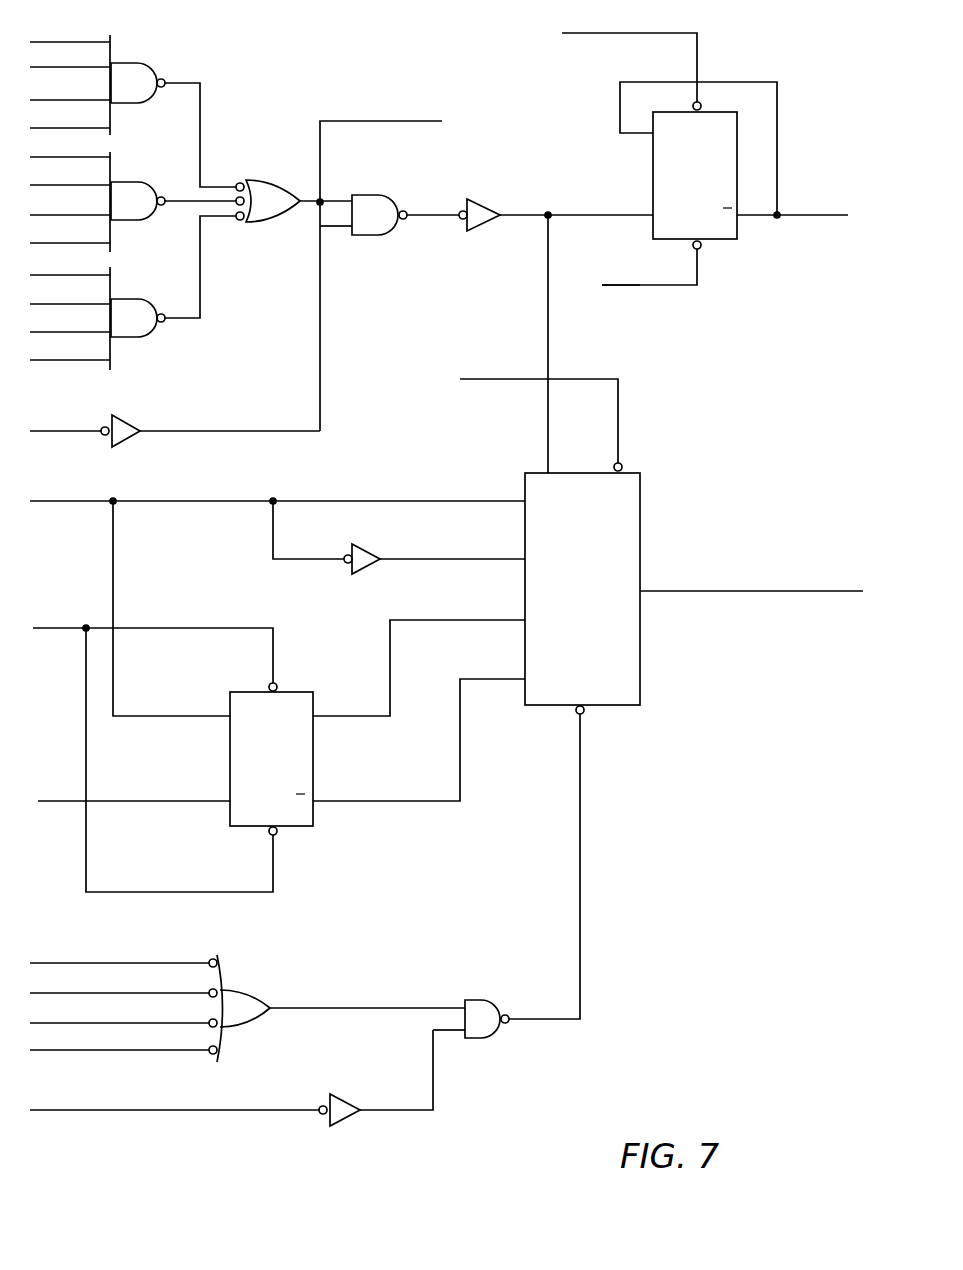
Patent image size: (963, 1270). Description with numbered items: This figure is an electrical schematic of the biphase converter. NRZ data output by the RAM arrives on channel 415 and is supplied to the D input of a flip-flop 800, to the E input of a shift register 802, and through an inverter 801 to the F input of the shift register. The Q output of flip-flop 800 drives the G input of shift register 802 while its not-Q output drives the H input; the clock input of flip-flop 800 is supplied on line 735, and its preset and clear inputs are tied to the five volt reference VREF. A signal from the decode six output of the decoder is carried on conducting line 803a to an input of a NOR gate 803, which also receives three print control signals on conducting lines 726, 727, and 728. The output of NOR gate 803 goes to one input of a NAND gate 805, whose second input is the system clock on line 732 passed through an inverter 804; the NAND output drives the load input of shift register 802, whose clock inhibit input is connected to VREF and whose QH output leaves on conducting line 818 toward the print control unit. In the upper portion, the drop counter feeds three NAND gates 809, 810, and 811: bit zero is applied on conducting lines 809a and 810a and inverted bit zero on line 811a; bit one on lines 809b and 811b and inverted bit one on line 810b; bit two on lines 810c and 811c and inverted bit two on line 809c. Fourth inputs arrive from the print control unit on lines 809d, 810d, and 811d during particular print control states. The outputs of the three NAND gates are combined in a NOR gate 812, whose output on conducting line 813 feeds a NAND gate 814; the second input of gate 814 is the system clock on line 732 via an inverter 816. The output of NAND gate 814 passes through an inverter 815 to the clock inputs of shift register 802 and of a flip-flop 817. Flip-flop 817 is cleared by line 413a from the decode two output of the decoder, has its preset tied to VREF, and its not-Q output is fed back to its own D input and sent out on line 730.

The NAND gate 809 is at (149, 69).
The conducting line 809a is at (72, 40).
The conducting line 809b is at (74, 67).
The conducting line 809c is at (74, 99).
The conducting line 809d is at (74, 126).
The NAND gate 810 is at (149, 187).
The conducting line 810a is at (72, 155).
The conducting line 810b is at (74, 184).
The conducting line 810c is at (74, 214).
The conducting line 810d is at (74, 242).
The NAND gate 811 is at (149, 304).
The conducting line 811a is at (72, 274).
The conducting line 811b is at (74, 303).
The conducting line 811c is at (72, 331).
The conducting line 811d is at (74, 359).
The NOR gate 812 is at (256, 179).
The conducting line 813 is at (401, 120).
The NAND gate 814 is at (379, 197).
The inverter 815 is at (494, 207).
The inverter 816 is at (134, 425).
The system clock line 732 is at (62, 431).
The flip-flop 817 is at (710, 172).
The line 730 is at (812, 210).
The line 413a is at (634, 290).
The shift register 802 is at (600, 555).
The conducting line 818 is at (796, 589).
The channel 415 is at (62, 501).
The inverter 801 is at (368, 560).
The flip-flop 800 is at (286, 761).
The line 735 is at (133, 799).
The NOR gate 803 is at (256, 990).
The conducting line 803a is at (102, 964).
The conducting line 726 is at (94, 994).
The conducting line 727 is at (99, 1024).
The conducting line 728 is at (99, 1052).
The NAND gate 805 is at (489, 1003).
The inverter 804 is at (343, 1118).